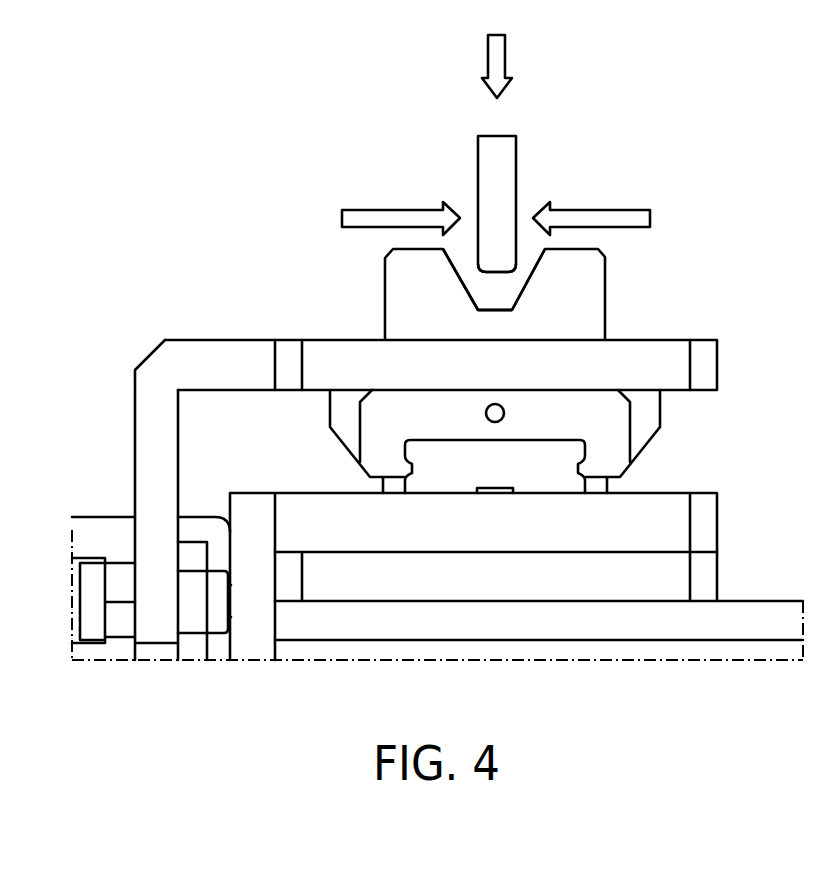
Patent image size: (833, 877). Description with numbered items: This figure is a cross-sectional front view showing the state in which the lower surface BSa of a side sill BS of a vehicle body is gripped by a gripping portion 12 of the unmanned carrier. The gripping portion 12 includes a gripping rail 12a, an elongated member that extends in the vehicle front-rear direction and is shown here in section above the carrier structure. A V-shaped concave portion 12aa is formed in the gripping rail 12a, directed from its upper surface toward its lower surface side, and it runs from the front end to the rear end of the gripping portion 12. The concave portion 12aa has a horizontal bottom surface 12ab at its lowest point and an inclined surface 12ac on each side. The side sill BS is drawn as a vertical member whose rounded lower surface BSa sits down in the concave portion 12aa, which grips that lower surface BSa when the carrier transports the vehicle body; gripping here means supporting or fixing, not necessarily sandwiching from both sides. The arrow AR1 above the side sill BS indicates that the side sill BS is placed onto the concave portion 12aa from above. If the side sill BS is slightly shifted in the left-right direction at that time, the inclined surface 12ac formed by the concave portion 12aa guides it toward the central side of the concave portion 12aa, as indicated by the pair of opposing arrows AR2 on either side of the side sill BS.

The gripping portion 12 is at (732, 229).
The gripping rail 12a is at (600, 278).
The concave portion 12aa is at (500, 282).
The bottom surface 12ab is at (490, 308).
The inclined surface 12ac is at (458, 275).
The side sill BS is at (517, 152).
The lower surface BSa is at (495, 268).
The arrow AR1 is at (505, 53).
The arrow AR2 is at (357, 210).